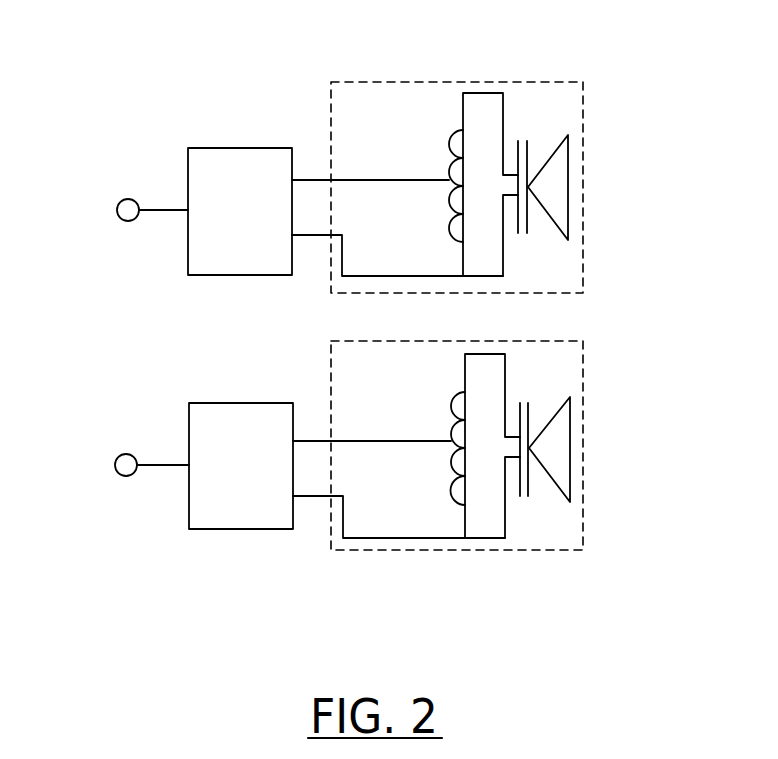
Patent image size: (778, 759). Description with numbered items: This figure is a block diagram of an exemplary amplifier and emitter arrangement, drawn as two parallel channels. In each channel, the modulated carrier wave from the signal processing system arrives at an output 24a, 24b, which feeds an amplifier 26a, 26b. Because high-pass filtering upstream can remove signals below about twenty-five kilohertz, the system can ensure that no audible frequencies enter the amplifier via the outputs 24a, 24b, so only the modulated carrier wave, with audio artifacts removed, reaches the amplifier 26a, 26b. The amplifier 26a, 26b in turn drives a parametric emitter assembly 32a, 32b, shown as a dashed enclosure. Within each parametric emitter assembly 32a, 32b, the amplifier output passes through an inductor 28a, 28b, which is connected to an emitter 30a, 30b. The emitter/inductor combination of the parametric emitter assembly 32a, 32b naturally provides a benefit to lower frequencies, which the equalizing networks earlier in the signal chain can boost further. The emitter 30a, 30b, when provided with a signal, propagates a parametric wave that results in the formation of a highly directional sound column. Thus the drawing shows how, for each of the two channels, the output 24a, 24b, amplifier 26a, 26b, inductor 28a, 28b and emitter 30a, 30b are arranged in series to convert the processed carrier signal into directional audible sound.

The output 24a is at (126, 199).
The amplifier 26a is at (205, 147).
The inductor 28a is at (430, 128).
The emitter 30a is at (565, 138).
The parametric emitter assembly 32a is at (585, 100).
The output 24b is at (125, 454).
The amplifier 26b is at (218, 529).
The inductor 28b is at (433, 480).
The emitter 30b is at (556, 490).
The parametric emitter assembly 32b is at (585, 360).